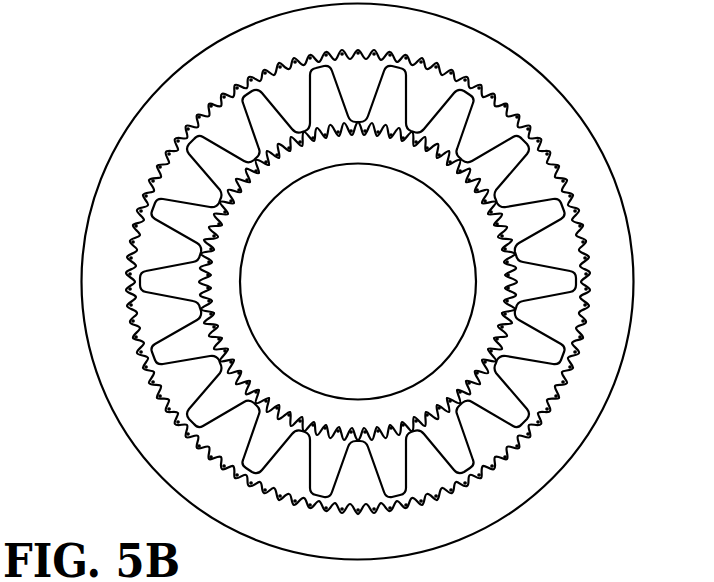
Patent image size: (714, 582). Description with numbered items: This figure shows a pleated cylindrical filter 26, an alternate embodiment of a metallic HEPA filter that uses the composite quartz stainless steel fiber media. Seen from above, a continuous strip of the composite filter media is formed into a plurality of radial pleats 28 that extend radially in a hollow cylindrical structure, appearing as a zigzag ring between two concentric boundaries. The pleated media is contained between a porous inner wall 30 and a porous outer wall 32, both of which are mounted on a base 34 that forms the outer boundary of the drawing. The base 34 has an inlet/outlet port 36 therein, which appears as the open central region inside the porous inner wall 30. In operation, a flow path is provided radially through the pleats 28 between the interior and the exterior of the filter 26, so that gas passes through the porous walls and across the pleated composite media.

The pleated cylindrical filter 26 is at (609, 81).
The radial pleats 28 is at (312, 87).
The porous inner wall 30 is at (478, 262).
The porous outer wall 32 is at (128, 238).
The base 34 is at (101, 386).
The inlet/outlet port 36 is at (370, 248).